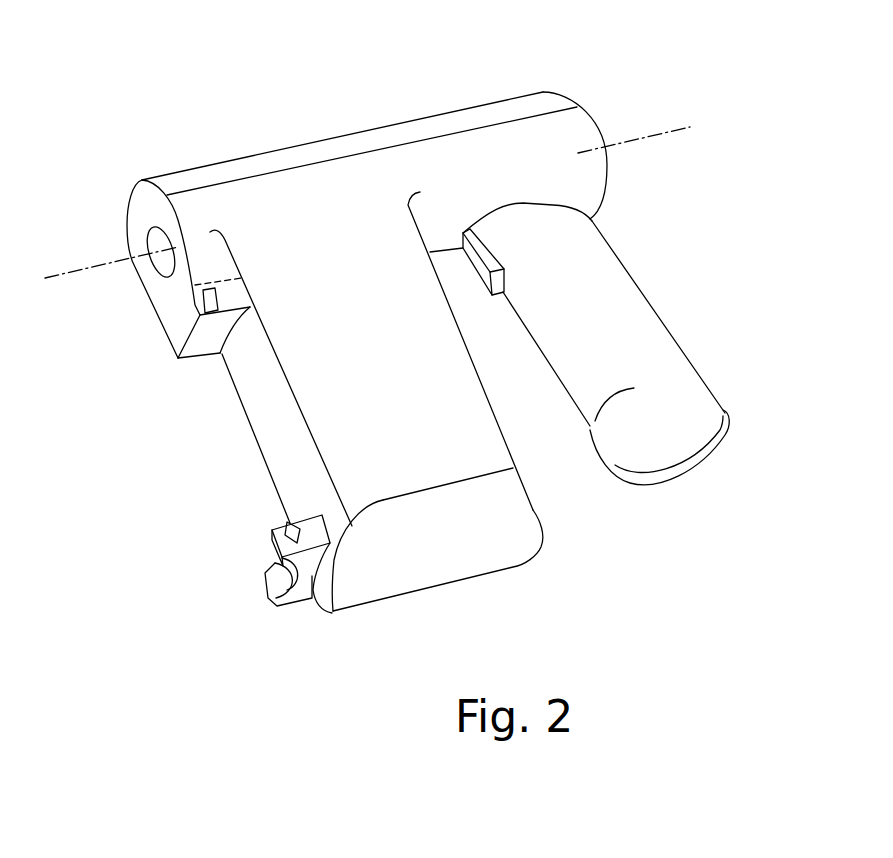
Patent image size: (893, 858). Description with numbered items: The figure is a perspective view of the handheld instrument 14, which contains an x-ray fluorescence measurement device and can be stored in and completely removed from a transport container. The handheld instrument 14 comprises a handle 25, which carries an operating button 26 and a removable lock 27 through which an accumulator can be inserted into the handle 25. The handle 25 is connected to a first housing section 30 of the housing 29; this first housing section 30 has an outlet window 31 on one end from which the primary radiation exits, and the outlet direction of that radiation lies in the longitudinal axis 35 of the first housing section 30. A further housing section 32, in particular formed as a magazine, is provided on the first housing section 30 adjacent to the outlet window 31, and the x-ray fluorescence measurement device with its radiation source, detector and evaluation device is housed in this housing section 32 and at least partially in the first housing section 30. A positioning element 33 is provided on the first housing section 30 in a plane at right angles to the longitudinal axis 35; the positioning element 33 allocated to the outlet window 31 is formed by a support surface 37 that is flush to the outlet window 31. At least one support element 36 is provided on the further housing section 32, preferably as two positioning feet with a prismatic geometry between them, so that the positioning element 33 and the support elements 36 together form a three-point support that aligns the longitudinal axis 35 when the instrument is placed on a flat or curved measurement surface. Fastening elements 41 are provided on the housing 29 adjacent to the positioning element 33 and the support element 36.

The handheld instrument 14 is at (694, 206).
The handle 25 is at (684, 329).
The operating button 26 is at (481, 278).
The removable lock 27 is at (667, 470).
The housing 29 is at (385, 108).
The first housing section 30 is at (268, 132).
The outlet window 31 is at (157, 243).
The further housing section 32 is at (232, 457).
The positioning element 33 is at (150, 333).
The longitudinal axis 35 is at (87, 266).
The support element 36 is at (257, 590).
The support surface 37 is at (170, 318).
The fastening elements 41 is at (217, 316).